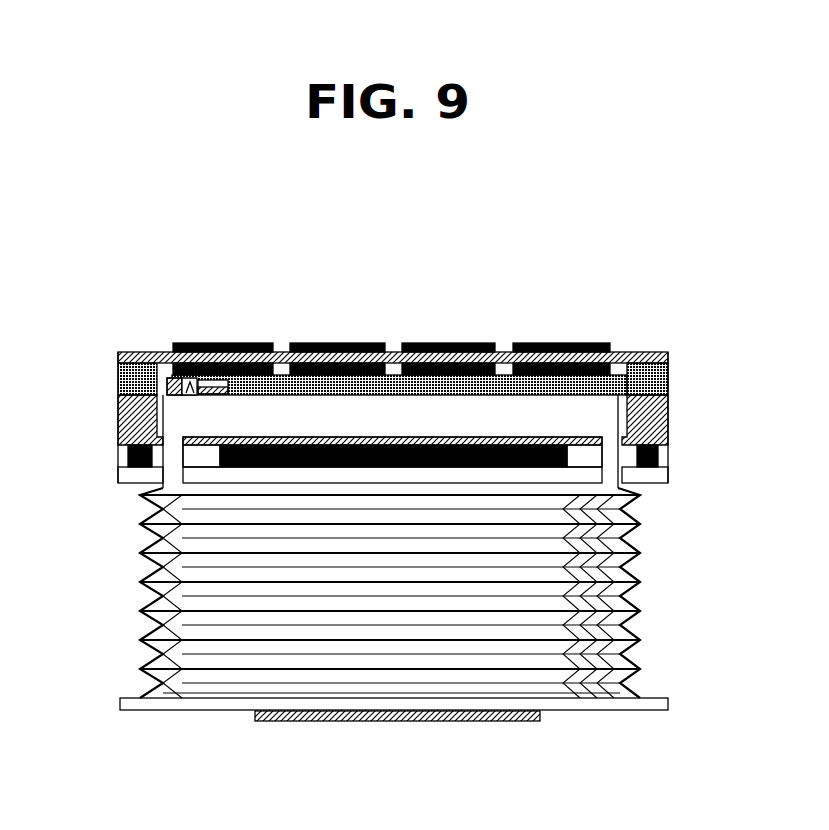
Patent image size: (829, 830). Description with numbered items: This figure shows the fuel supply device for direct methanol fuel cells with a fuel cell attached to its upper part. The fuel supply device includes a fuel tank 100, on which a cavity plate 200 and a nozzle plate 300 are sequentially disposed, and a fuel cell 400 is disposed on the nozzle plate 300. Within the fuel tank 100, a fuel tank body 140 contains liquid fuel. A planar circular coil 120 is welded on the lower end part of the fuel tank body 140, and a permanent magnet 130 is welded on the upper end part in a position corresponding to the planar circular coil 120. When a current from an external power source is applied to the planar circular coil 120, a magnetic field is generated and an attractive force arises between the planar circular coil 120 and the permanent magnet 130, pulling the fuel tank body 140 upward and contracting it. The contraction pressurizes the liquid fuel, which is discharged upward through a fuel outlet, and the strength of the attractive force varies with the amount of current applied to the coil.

The fuel tank 100 is at (685, 450).
The planar circular coil 120 is at (383, 722).
The permanent magnet 130 is at (240, 468).
The fuel tank body 140 is at (148, 604).
The cavity plate 200 is at (127, 427).
The nozzle plate 300 is at (118, 373).
The fuel cell 400 is at (155, 350).